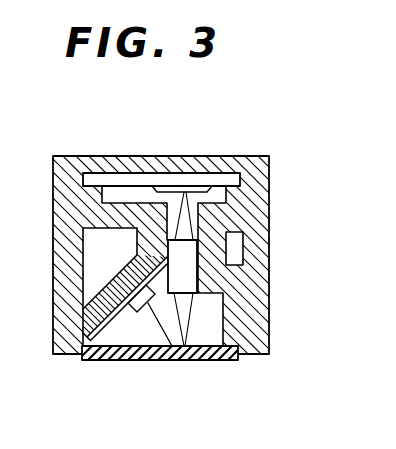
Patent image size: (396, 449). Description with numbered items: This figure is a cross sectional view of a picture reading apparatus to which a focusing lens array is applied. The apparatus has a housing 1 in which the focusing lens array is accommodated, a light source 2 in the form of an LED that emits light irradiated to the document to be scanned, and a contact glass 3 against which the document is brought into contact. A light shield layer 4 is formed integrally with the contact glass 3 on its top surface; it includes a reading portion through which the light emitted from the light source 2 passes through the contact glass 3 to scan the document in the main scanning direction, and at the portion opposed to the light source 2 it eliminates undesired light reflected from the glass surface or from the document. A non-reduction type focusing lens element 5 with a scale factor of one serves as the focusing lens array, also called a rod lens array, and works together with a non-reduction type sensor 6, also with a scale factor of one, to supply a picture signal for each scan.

The housing 1 is at (270, 208).
The light source 2 is at (112, 360).
The contact glass 3 is at (225, 360).
The light shield layer 4 is at (130, 360).
The non-reduction type focusing lens element 5 is at (193, 279).
The non-reduction type sensor 6 is at (185, 183).